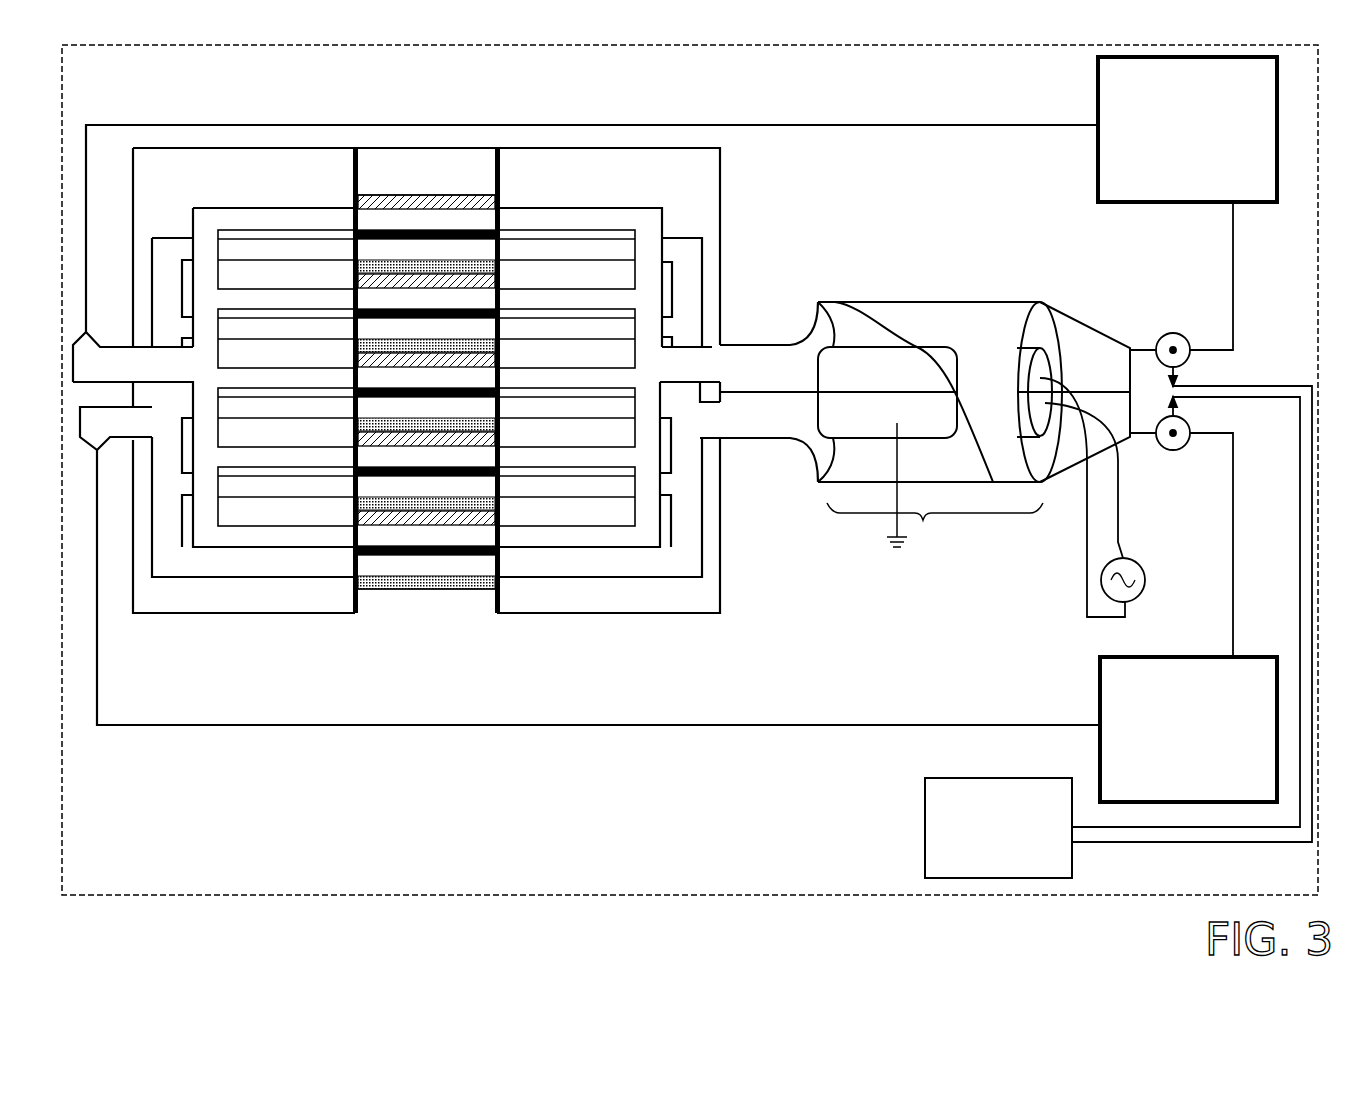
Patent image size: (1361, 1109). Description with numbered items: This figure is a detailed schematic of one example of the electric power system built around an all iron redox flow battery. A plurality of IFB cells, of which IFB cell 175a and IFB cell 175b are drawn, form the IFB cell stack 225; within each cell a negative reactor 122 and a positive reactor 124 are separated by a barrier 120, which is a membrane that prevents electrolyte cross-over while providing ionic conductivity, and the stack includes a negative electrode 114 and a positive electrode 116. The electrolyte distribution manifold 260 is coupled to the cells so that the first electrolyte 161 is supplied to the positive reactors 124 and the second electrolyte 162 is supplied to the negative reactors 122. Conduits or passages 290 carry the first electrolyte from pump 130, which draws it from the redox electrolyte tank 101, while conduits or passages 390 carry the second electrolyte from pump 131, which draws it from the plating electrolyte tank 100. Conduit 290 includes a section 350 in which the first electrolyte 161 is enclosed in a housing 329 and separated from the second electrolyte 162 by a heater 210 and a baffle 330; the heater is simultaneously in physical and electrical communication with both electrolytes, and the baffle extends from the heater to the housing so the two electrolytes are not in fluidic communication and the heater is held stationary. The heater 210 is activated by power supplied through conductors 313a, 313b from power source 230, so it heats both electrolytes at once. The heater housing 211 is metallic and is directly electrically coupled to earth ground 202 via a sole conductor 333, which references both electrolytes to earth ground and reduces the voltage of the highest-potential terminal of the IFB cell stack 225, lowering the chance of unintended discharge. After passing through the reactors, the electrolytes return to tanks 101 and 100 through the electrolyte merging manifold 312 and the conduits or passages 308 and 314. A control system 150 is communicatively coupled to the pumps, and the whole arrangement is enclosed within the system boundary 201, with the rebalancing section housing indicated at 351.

The plating electrolyte tank 100 is at (1188, 729).
The redox electrolyte tank 101 is at (1187, 129).
The negative electrode 114 is at (353, 260).
The positive electrode 116 is at (422, 194).
The barrier 120 is at (502, 207).
The negative reactor 122 is at (426, 402).
The positive reactor 124 is at (426, 370).
The pump 130 is at (1178, 333).
The pump 131 is at (1163, 450).
The control system 150 is at (922, 780).
The first electrolyte 161 is at (757, 353).
The second electrolyte 162 is at (777, 422).
The IFB cell 175a is at (405, 604).
The IFB cell 175b is at (340, 185).
The system boundary 201 is at (432, 893).
The earth ground 202 is at (899, 552).
The heater 210 is at (865, 450).
The heater housing 211 is at (907, 422).
The IFB cell stack 225 is at (406, 132).
The power source 230 is at (1141, 587).
The electrolyte distribution manifold 260 is at (712, 172).
The conduits or passages 290 is at (613, 216).
The conduit or passage 308 is at (548, 122).
The electrolyte merging manifold 312 is at (207, 600).
The conductor 313a is at (1087, 617).
The conductor 313b is at (1123, 542).
The conduit or passage 314 is at (232, 727).
The housing 329 is at (1010, 500).
The baffle 330 is at (882, 392).
The sole conductor 333 is at (890, 530).
The section 350 is at (1040, 293).
The rebalancing cell housing 351 is at (935, 523).
The conduits or passages 390 is at (1140, 470).